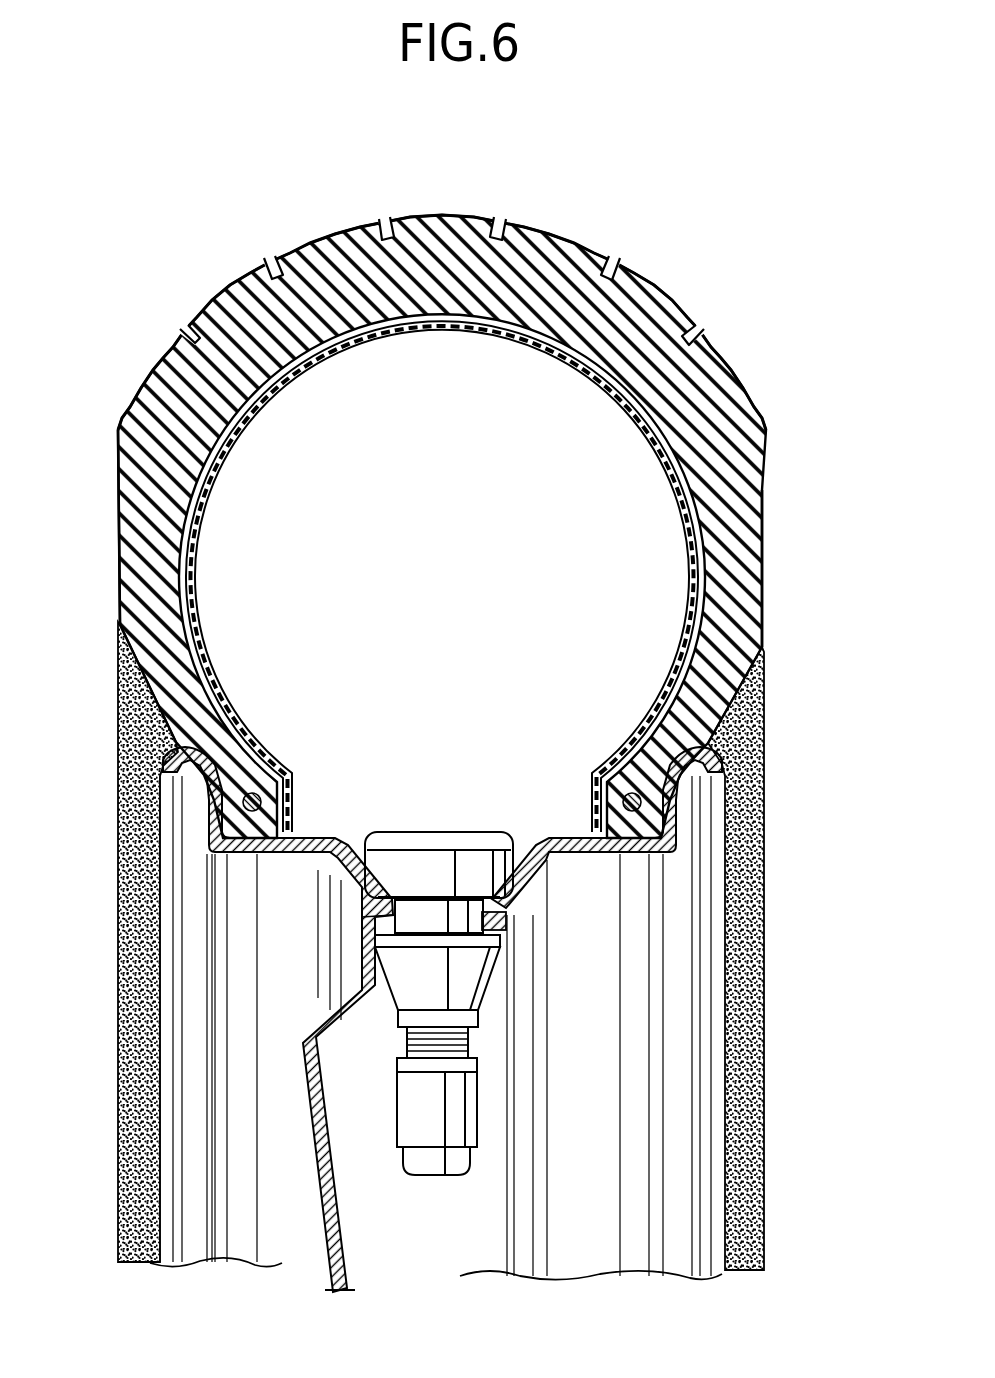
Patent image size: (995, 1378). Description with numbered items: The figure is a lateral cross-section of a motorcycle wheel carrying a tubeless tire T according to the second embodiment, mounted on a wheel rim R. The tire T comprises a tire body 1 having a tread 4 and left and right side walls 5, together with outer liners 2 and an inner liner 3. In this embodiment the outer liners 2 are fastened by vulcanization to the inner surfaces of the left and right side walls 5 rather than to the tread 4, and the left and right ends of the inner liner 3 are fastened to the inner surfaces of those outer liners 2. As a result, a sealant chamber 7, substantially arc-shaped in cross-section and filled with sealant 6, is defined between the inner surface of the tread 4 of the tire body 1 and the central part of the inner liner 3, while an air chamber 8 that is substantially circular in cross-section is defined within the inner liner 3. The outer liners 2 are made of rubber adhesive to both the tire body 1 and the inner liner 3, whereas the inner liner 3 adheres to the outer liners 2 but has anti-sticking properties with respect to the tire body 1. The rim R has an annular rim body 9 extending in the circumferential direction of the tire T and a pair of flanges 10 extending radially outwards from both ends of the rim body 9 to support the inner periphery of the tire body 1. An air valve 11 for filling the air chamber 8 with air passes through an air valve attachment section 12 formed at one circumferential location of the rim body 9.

The tire body 1 is at (565, 236).
The outer liner 2 is at (217, 690).
The inner liner 3 is at (350, 345).
The tread 4 is at (316, 248).
The side wall 5 is at (130, 635).
The sealant 6 is at (244, 413).
The sealant chamber 7 is at (614, 400).
The air chamber 8 is at (450, 602).
The rim body 9 is at (276, 842).
The flange 10 is at (132, 735).
The air valve 11 is at (398, 1007).
The air valve attachment section 12 is at (536, 876).
The tubeless tire T is at (740, 332).
The wheel rim R is at (720, 1082).